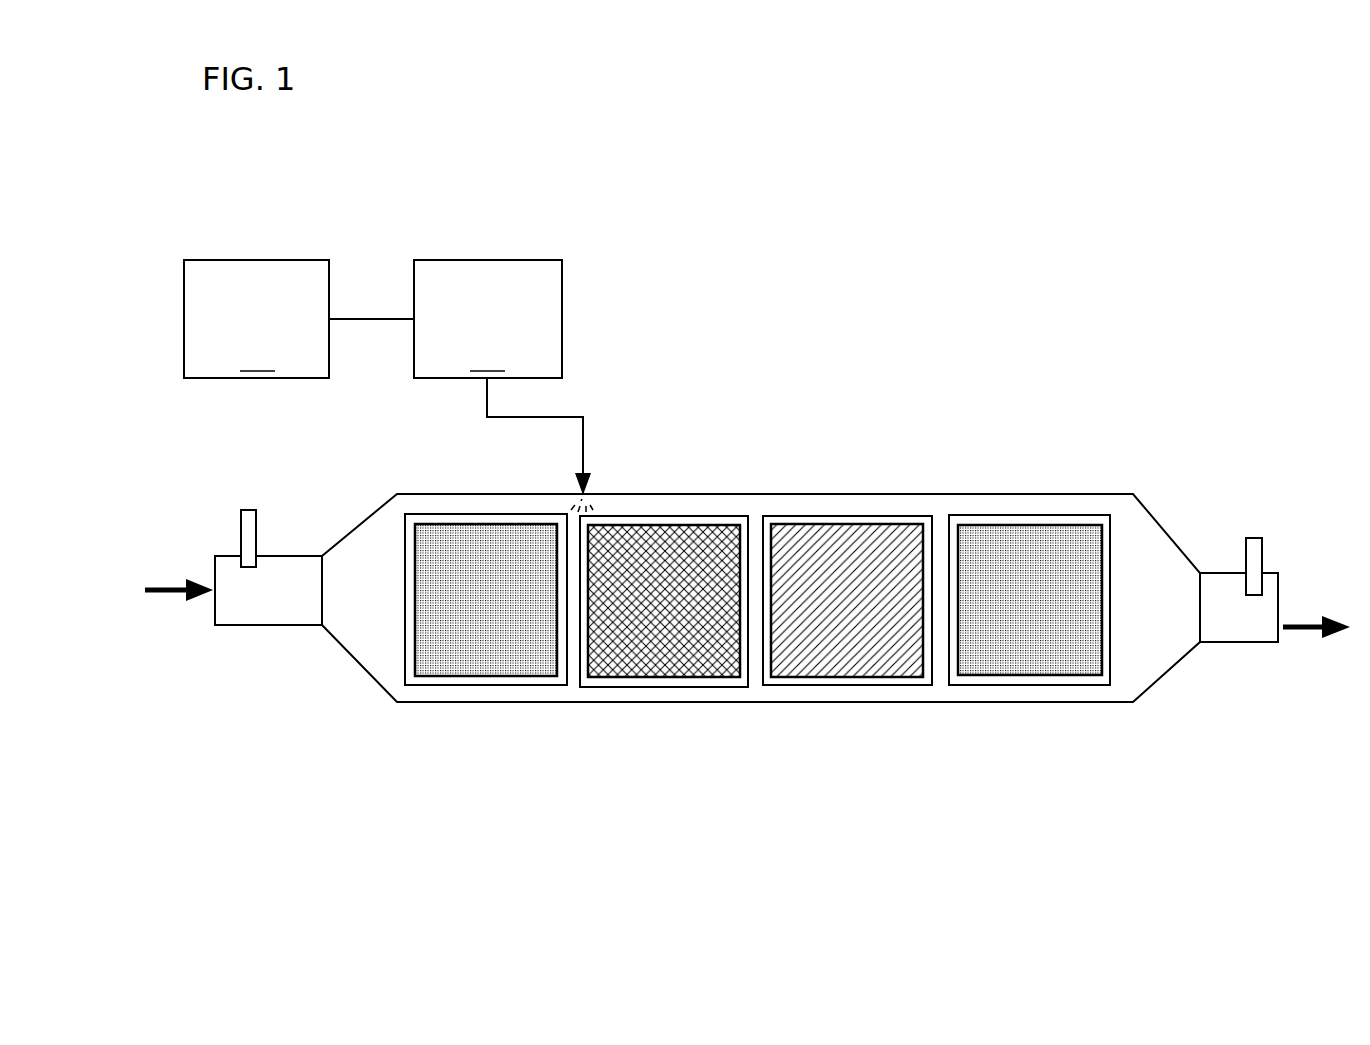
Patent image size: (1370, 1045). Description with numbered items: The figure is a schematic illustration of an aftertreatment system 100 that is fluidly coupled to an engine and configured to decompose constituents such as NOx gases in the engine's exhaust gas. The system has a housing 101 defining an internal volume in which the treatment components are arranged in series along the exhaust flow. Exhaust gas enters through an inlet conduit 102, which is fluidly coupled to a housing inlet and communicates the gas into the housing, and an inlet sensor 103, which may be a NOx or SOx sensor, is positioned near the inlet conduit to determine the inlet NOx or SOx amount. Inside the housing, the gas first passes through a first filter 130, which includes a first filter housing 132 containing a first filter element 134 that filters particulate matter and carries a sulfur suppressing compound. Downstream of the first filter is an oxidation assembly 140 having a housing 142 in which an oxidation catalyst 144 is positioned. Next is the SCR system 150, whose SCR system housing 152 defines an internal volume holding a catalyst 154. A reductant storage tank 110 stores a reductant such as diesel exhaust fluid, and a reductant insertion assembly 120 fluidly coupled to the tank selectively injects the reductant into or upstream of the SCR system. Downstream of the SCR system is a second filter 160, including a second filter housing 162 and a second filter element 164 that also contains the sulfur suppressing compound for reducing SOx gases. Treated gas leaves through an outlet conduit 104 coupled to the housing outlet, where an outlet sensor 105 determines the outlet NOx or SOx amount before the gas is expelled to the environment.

The aftertreatment system 100 is at (917, 257).
The housing 101 is at (357, 660).
The inlet conduit 102 is at (282, 610).
The inlet sensor 103 is at (253, 516).
The outlet conduit 104 is at (1237, 643).
The outlet sensor 105 is at (1257, 547).
The reductant storage tank 110 is at (256, 319).
The reductant insertion assembly 120 is at (503, 386).
The first filter 130 is at (495, 646).
The first filter housing 132 is at (550, 687).
The first filter element 134 is at (432, 662).
The oxidation assembly 140 is at (665, 653).
The housing 142 is at (733, 690).
The oxidation catalyst 144 is at (688, 673).
The SCR system 150 is at (848, 651).
The SCR system housing 152 is at (915, 688).
The catalyst 154 is at (873, 670).
The second filter 160 is at (1039, 649).
The second filter housing 162 is at (1093, 688).
The second filter element 164 is at (975, 665).